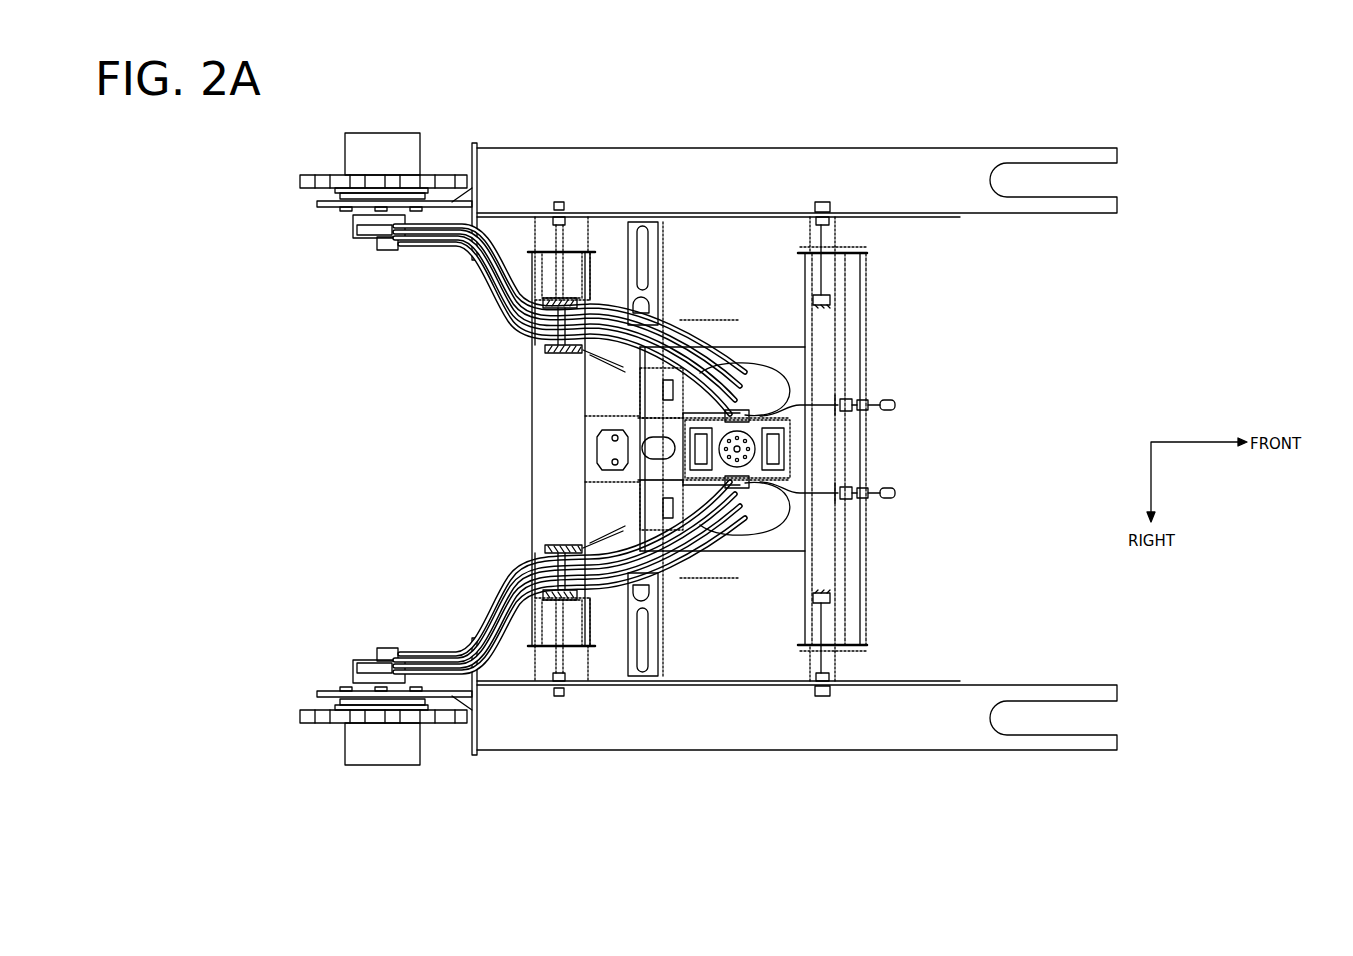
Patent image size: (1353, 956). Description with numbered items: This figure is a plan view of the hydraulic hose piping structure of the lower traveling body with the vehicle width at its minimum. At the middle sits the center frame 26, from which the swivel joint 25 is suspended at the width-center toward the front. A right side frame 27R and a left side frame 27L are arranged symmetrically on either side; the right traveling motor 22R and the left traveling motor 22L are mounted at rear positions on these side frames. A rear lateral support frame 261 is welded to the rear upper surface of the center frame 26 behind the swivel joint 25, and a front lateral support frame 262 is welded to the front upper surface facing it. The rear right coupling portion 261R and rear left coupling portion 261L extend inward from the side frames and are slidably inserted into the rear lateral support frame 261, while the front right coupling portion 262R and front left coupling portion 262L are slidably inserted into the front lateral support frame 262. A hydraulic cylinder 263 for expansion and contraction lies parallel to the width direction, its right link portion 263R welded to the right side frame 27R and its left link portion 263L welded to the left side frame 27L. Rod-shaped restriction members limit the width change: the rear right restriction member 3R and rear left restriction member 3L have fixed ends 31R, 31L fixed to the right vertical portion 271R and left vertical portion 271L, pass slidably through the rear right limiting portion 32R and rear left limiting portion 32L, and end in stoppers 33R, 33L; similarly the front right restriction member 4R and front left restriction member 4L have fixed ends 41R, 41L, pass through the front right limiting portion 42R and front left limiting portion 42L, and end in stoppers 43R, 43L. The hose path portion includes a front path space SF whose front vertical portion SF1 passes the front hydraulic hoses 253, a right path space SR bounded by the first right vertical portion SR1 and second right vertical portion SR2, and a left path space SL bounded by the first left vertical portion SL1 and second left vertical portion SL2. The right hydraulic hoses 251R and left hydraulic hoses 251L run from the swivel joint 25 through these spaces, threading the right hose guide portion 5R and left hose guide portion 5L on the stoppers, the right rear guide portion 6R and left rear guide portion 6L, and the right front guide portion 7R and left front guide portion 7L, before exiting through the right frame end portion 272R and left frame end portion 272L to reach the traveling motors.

The left traveling motor 22L is at (345, 150).
The right traveling motor 22R is at (345, 748).
The left frame end portion 272L is at (473, 152).
The right frame end portion 272R is at (473, 748).
The rear left coupling portion 261L is at (538, 232).
The rear right coupling portion 261R is at (538, 668).
The fixed end 31L is at (556, 203).
The fixed end 31R is at (556, 695).
The rear left restriction member 3L is at (572, 250).
The rear right restriction member 3R is at (572, 648).
The rear left limiting portion 32L is at (590, 255).
The rear right limiting portion 32R is at (590, 643).
The stopper 33L is at (600, 300).
The stopper 33R is at (600, 598).
The front left coupling portion 262L is at (800, 235).
The front right coupling portion 262R is at (800, 663).
The fixed end 41L is at (820, 200).
The fixed end 41R is at (820, 698).
The front left restriction member 4L is at (824, 250).
The front right restriction member 4R is at (824, 648).
The front left limiting portion 42L is at (845, 250).
The front right limiting portion 42R is at (845, 648).
The stopper 43L is at (862, 255).
The stopper 43R is at (862, 643).
The left side frame 27L is at (935, 152).
The right side frame 27R is at (935, 746).
The left vertical portion 271L is at (913, 222).
The right vertical portion 271R is at (912, 678).
The left link portion 263L is at (650, 280).
The right link portion 263R is at (650, 618).
The hydraulic cylinder 263 is at (645, 318).
The center frame 26 is at (805, 310).
The front lateral support frame 262 is at (860, 568).
The rear lateral support frame 261 is at (532, 452).
The swivel joint 25 is at (765, 450).
The front hydraulic hoses 253 is at (905, 492).
The front path space SF is at (845, 403).
The front vertical portion SF1 is at (862, 388).
The left path space SL is at (628, 352).
The first left vertical portion SL1 is at (705, 352).
The second left vertical portion SL2 is at (645, 368).
The right path space SR is at (628, 552).
The first right vertical portion SR1 is at (705, 548).
The second right vertical portion SR2 is at (645, 540).
The left hydraulic hoses 251L is at (480, 313).
The right hydraulic hoses 251R is at (480, 585).
The left hose guide portion 5L is at (530, 362).
The right hose guide portion 5R is at (530, 536).
The left rear guide portion 6L is at (525, 345).
The right rear guide portion 6R is at (525, 553).
The left front guide portion 7L is at (640, 378).
The right front guide portion 7R is at (640, 528).